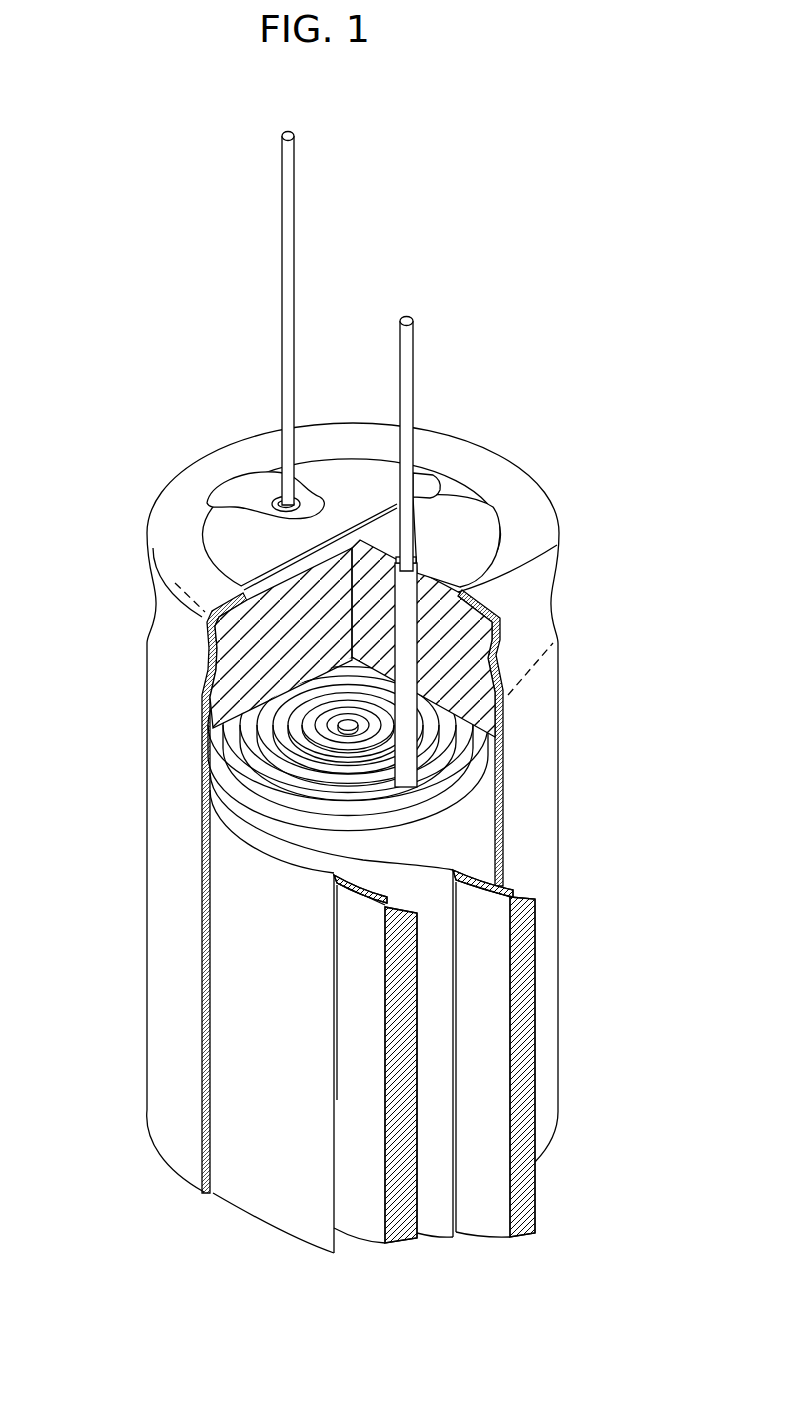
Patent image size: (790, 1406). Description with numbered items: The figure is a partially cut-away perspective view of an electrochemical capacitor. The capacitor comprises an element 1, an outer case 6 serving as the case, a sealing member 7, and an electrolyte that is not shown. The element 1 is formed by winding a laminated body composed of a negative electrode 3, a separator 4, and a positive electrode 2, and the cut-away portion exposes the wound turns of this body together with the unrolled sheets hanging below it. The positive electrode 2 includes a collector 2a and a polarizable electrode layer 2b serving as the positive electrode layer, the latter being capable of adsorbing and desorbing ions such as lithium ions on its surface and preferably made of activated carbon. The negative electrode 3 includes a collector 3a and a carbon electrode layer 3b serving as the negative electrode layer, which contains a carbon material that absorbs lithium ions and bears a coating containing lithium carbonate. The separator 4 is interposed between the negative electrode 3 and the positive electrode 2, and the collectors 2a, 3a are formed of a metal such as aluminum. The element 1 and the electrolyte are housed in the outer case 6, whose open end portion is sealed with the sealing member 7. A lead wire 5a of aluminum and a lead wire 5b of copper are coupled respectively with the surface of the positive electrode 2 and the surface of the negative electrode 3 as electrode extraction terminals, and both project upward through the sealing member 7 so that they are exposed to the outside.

The element 1 is at (303, 767).
The positive electrode 2 is at (564, 1058).
The collector 2a is at (533, 930).
The polarizable electrode layer 2b is at (495, 983).
The negative electrode 3 is at (503, 1063).
The collector 3a is at (408, 1042).
The carbon electrode layer 3b is at (365, 1080).
The separator 4 is at (440, 1223).
The lead wire 5a is at (295, 218).
The lead wire 5b is at (414, 345).
The outer case 6 is at (548, 683).
The sealing member 7 is at (235, 652).